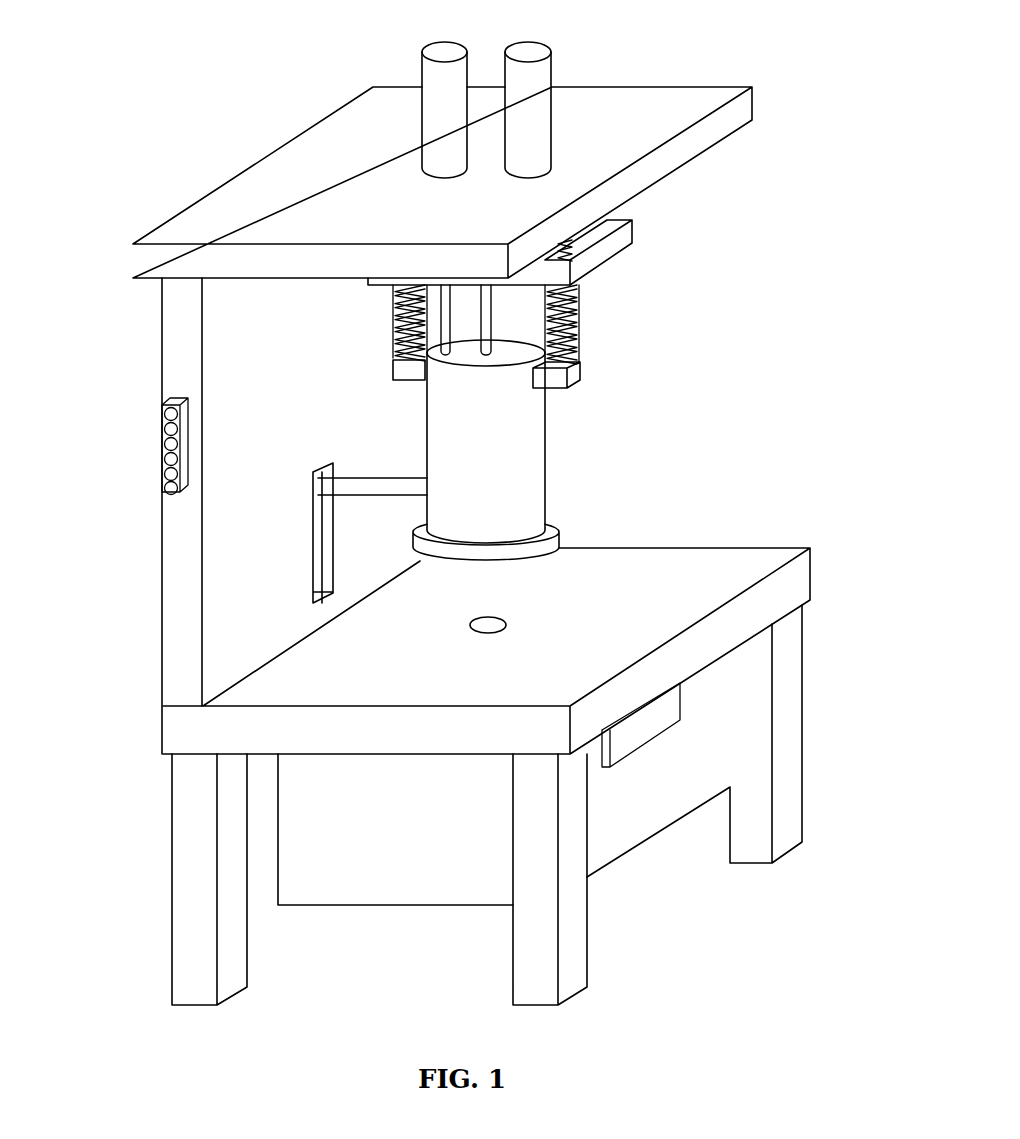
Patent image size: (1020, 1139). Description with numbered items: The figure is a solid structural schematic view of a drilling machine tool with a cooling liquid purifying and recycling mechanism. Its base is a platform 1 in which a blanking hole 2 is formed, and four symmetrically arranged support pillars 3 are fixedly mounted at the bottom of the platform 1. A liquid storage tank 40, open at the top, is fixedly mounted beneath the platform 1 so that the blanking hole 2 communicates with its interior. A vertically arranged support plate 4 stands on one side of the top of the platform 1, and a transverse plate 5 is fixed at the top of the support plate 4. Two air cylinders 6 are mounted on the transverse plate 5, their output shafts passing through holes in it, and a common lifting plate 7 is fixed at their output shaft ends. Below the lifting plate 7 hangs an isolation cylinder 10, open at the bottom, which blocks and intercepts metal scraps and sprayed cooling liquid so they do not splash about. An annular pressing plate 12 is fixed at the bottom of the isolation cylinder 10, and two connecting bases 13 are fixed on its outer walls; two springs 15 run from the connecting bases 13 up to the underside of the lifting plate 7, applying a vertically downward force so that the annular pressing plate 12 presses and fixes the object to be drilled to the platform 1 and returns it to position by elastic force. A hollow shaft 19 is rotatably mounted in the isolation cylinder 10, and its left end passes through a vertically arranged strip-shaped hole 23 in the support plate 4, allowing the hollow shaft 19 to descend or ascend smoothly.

The platform 1 is at (183, 735).
The blanking hole 2 is at (505, 632).
The support pillars 3 is at (192, 892).
The support plate 4 is at (162, 342).
The transverse plate 5 is at (330, 155).
The air cylinders 6 is at (433, 73).
The lifting plate 7 is at (633, 230).
The isolation cylinder 10 is at (522, 438).
The annular pressing plate 12 is at (560, 533).
The connecting bases 13 is at (581, 375).
The springs 15 is at (578, 325).
The hollow shaft 19 is at (375, 495).
The strip-shaped hole 23 is at (323, 566).
The liquid storage tank 40 is at (380, 863).